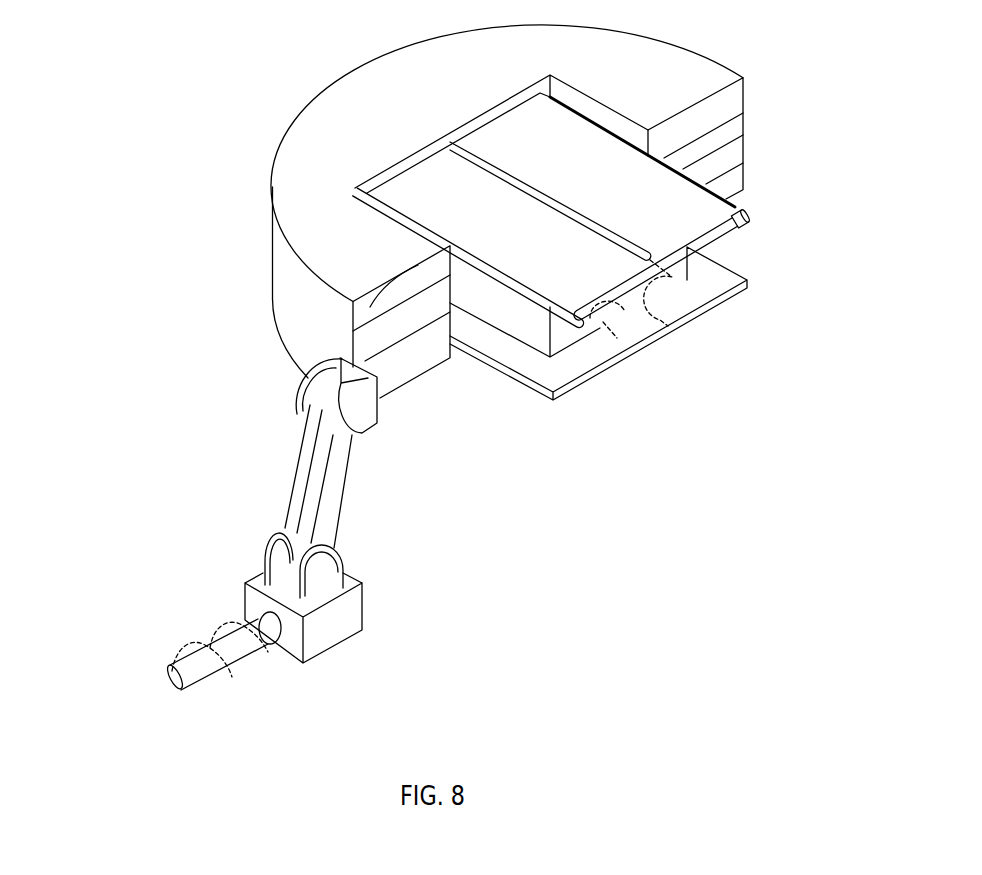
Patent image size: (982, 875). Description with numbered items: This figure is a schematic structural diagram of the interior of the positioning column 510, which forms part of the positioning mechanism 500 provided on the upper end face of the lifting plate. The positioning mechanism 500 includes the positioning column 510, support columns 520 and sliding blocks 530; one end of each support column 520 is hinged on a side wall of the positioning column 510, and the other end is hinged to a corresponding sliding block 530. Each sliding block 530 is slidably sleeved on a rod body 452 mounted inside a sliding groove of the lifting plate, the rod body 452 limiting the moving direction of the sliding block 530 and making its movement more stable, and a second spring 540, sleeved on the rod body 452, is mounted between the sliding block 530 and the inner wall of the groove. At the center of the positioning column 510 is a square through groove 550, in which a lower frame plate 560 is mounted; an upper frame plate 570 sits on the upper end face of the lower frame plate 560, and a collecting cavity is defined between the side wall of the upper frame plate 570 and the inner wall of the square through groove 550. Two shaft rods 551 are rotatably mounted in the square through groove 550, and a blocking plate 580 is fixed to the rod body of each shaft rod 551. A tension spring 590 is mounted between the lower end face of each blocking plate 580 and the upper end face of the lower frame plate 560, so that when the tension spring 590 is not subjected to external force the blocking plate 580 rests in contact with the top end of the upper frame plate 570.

The positioning mechanism 500 is at (397, 311).
The positioning column 510 is at (443, 211).
The support column 520 is at (260, 453).
The sliding block 530 is at (244, 565).
The second spring 540 is at (303, 669).
The rod body 452 is at (212, 692).
The square through groove 550 is at (585, 196).
The shaft rod 551 is at (774, 196).
The lower frame plate 560 is at (633, 323).
The upper frame plate 570 is at (695, 266).
The blocking plate 580 is at (592, 176).
The tension spring 590 is at (703, 299).